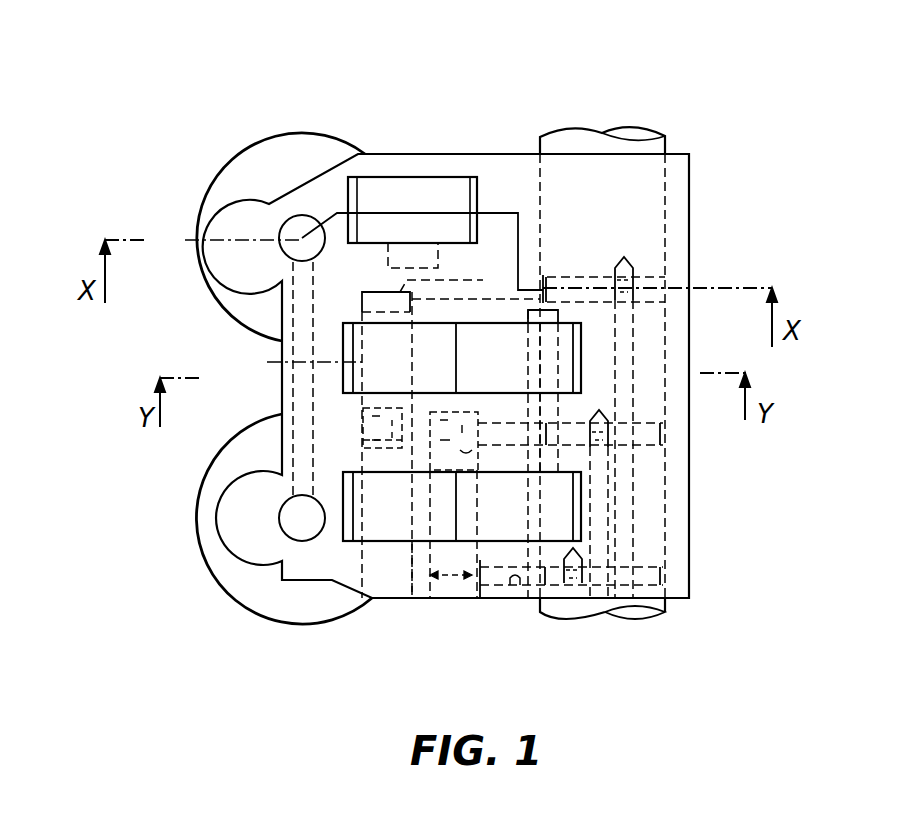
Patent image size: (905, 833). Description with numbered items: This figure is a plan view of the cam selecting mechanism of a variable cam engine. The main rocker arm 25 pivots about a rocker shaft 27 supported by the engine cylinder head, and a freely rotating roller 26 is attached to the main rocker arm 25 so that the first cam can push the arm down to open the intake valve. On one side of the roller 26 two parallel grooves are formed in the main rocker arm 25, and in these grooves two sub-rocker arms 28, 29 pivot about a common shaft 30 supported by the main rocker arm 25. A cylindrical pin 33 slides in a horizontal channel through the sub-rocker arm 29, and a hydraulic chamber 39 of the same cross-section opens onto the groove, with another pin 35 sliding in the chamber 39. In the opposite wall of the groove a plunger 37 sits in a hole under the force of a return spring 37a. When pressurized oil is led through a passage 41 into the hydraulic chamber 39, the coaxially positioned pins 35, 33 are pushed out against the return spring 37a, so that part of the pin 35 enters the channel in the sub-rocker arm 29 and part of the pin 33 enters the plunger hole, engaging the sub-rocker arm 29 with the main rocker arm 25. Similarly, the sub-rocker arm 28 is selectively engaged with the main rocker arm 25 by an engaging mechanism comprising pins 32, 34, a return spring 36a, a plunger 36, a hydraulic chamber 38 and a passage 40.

The main rocker arm 25 is at (460, 154).
The roller 26 is at (373, 192).
The rocker shaft 27 is at (630, 137).
The sub-rocker arm 28 is at (515, 498).
The sub-rocker arm 29 is at (515, 344).
The common shaft 30 is at (560, 398).
The pin 32 is at (430, 515).
The cylindrical pin 33 is at (324, 445).
The pin 34 is at (427, 598).
The pin 35 is at (353, 293).
The plunger 36 is at (430, 470).
The return spring 36a is at (438, 474).
The plunger 37 is at (363, 425).
The return spring 37a is at (363, 440).
The hydraulic chamber 38 is at (470, 598).
The hydraulic chamber 39 is at (353, 308).
The passage 40 is at (515, 580).
The passage 41 is at (483, 282).